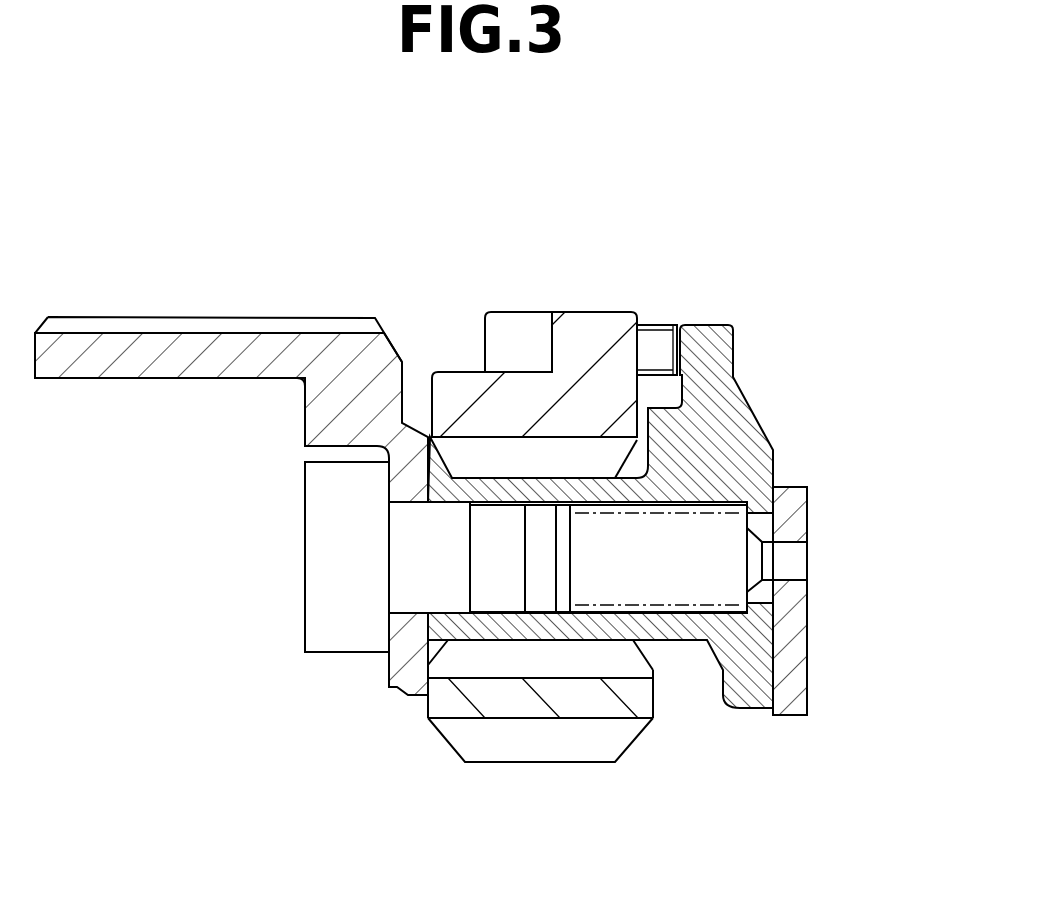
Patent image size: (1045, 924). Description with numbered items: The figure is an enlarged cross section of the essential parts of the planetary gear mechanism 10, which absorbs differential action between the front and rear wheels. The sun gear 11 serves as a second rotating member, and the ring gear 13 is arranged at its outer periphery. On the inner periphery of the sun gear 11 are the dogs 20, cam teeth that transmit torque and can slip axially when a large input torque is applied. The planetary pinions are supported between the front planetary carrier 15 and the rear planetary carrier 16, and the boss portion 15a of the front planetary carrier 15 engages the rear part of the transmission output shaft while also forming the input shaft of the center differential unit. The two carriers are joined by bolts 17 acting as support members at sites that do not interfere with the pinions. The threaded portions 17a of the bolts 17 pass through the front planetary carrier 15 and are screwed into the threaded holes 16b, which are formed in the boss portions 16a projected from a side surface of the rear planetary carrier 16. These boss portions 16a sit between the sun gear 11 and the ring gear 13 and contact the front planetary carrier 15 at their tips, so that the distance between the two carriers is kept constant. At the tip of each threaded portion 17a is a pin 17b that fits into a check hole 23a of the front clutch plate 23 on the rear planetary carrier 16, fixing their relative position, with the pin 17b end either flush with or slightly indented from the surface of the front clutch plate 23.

The planetary gear mechanism 10 is at (838, 306).
The sun gear 11 is at (588, 325).
The ring gear 13 is at (497, 745).
The front planetary carrier 15 is at (330, 403).
The boss portion 15a is at (137, 380).
The rear planetary carrier 16 is at (750, 400).
The boss portions 16a is at (681, 640).
The threaded holes 16b is at (591, 613).
The bolts 17 is at (342, 620).
The threaded portions 17a is at (667, 578).
The pins 17b is at (793, 562).
The dogs 20 is at (520, 325).
The front clutch plate 23 is at (793, 677).
The check holes 23a is at (793, 530).